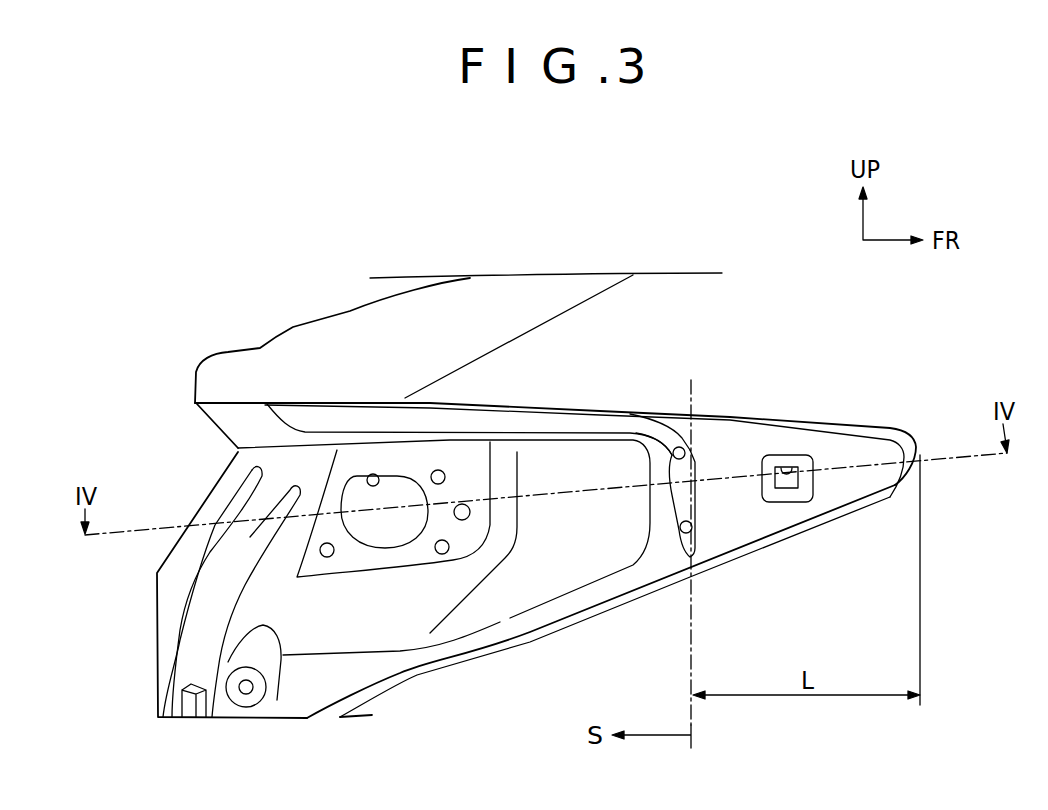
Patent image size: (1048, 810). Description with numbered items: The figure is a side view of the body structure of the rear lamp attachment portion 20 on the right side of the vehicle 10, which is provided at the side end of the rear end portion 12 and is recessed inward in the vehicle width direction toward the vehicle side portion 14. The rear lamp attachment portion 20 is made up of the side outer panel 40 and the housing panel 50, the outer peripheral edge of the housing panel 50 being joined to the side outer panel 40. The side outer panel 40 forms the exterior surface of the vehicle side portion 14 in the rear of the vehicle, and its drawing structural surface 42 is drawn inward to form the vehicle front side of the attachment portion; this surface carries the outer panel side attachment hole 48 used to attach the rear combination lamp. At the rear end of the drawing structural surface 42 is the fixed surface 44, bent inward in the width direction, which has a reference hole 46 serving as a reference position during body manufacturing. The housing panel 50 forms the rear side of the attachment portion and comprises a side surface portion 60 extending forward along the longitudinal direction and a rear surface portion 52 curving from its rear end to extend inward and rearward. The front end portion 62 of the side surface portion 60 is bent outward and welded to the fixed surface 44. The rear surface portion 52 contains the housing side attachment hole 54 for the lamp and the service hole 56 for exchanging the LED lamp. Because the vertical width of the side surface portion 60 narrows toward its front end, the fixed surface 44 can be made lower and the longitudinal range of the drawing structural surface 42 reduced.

The vehicle 10 is at (602, 217).
The rear end portion 12 is at (350, 312).
The vehicle side portion 14 is at (848, 553).
The rear lamp attachment portion 20 is at (245, 458).
The side outer panel 40 is at (840, 345).
The drawing structural surface 42 is at (745, 430).
The fixed surface 44 is at (687, 437).
The reference hole 46 is at (684, 460).
The outer panel side attachment hole 48 is at (782, 467).
The housing panel 50 is at (538, 420).
The rear surface portion 52 is at (498, 455).
The housing side attachment hole 54 is at (466, 507).
The service hole 56 is at (373, 475).
The side surface portion 60 is at (593, 460).
The front end portion 62 is at (660, 430).